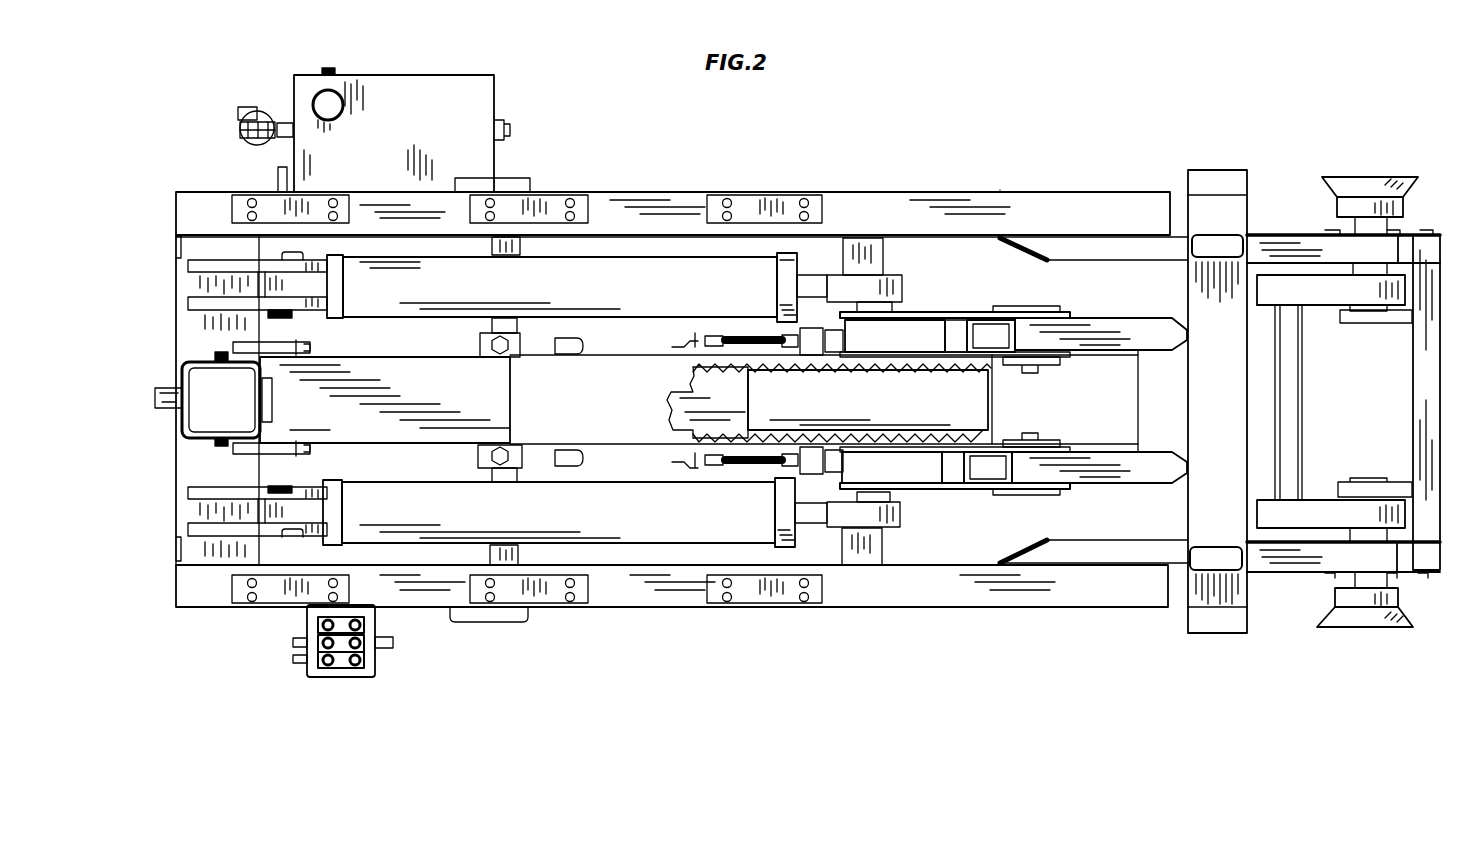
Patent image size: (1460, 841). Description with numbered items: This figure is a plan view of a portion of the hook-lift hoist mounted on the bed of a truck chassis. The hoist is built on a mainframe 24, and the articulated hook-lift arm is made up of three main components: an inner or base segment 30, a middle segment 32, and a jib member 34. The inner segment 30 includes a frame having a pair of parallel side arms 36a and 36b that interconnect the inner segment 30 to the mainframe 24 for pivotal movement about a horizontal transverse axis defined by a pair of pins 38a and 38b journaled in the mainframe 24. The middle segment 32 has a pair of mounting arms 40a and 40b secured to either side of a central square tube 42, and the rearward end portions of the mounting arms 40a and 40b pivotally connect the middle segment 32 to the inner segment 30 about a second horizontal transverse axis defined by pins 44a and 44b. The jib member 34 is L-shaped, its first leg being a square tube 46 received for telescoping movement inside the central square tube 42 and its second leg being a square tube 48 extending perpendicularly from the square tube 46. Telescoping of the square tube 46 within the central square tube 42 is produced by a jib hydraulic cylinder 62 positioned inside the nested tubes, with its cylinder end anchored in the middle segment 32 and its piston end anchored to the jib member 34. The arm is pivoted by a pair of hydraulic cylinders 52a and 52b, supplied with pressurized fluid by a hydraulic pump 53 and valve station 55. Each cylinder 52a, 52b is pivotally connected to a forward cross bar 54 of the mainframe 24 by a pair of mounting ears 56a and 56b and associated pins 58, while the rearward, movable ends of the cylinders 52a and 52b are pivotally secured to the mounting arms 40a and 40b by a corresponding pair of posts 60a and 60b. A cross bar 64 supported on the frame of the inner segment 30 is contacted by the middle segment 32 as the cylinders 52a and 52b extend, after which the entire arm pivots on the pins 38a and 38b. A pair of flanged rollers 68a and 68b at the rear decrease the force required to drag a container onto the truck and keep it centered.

The mainframe 24 is at (985, 598).
The inner segment 30 is at (1085, 318).
The middle segment 32 is at (1013, 339).
The jib member 34 is at (300, 399).
The side arm 36a is at (1103, 480).
The side arm 36b is at (1113, 330).
The pin 38a is at (1375, 482).
The pin 38b is at (1372, 325).
The mounting arm 40a is at (908, 490).
The mounting arm 40b is at (890, 340).
The central square tube 42 is at (633, 403).
The pin 44a is at (1035, 433).
The pin 44b is at (1035, 372).
The square tube 46 is at (358, 430).
The square tube 48 is at (182, 430).
The hydraulic cylinder 52a is at (598, 517).
The hydraulic cylinder 52b is at (598, 285).
The hydraulic pump 53 is at (448, 131).
The forward cross bar 54 is at (200, 333).
The valve station 55 is at (352, 673).
The mounting ear 56a is at (190, 529).
The mounting ear 56b is at (190, 302).
The pin 58 is at (295, 255).
The post 60a is at (880, 530).
The post 60b is at (875, 272).
The jib hydraulic cylinder 62 is at (870, 395).
The cross bar 64 is at (1252, 304).
The flanged roller 68a is at (1382, 620).
The flanged roller 68b is at (1365, 185).